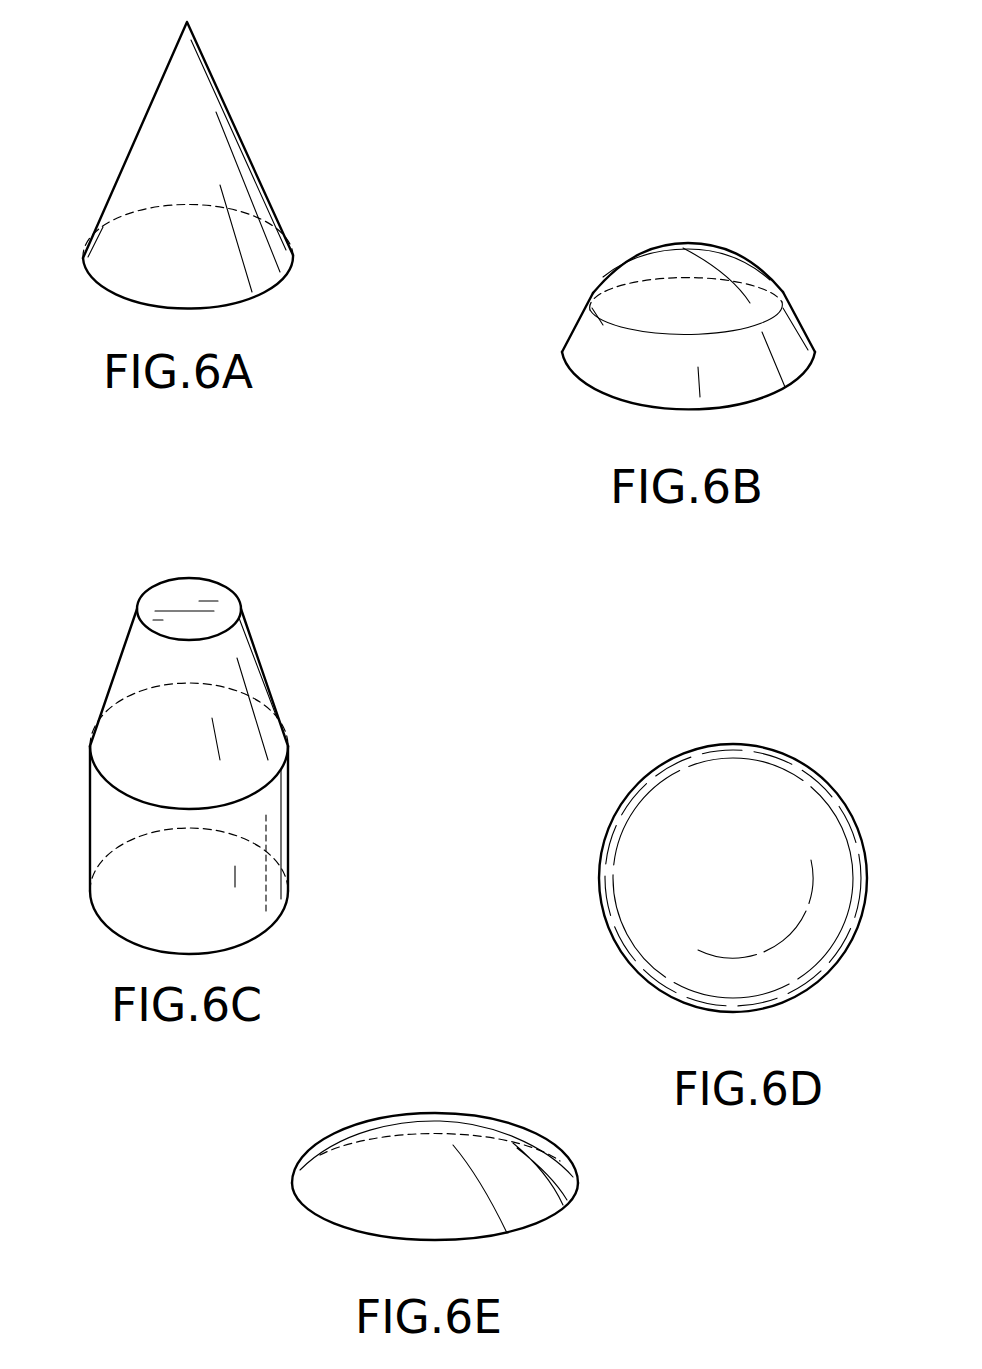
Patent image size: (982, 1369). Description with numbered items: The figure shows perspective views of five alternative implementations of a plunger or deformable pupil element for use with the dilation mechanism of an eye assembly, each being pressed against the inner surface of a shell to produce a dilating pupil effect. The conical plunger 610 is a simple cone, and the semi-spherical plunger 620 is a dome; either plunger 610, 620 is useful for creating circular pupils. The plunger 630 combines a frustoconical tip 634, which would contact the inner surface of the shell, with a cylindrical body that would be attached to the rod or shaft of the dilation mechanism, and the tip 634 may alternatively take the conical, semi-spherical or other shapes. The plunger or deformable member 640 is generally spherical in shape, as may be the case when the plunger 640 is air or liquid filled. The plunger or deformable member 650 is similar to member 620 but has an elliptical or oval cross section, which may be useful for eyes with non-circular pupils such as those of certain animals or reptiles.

In FIG. 6A, the conical plunger 610 is at (100, 118).
In FIG. 6B, the semi-spherical plunger 620 is at (583, 260).
In FIG. 6C, the plunger 630 is at (215, 727).
In FIG. 6C, the frustoconical tip 634 is at (124, 648).
In FIG. 6D, the plunger or deformable member 640 is at (650, 750).
In FIG. 6E, the plunger or deformable member 650 is at (405, 1095).